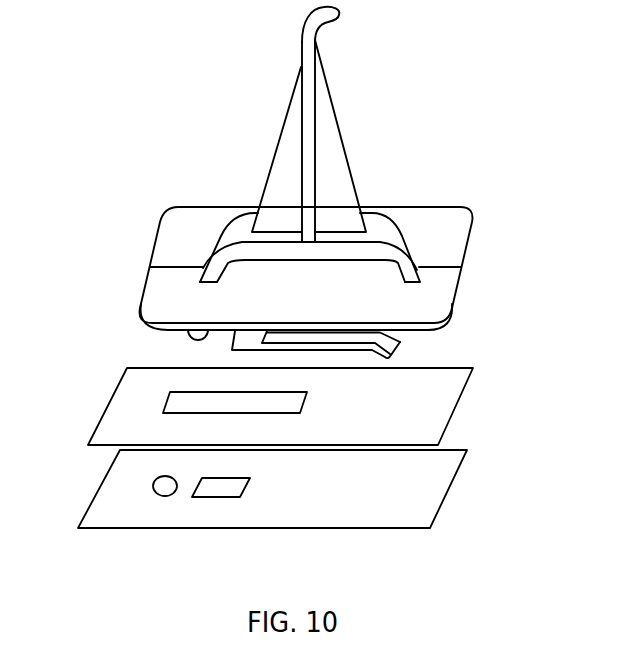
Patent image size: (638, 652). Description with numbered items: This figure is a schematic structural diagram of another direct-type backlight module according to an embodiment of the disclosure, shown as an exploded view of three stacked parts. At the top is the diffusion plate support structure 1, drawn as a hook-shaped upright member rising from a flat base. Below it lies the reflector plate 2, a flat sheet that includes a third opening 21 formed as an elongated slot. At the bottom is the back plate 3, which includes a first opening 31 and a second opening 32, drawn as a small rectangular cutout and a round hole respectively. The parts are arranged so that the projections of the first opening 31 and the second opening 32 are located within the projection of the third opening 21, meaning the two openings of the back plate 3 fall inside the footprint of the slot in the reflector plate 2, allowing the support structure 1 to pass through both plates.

The diffusion plate support structure 1 is at (332, 102).
The reflector plate 2 is at (289, 406).
The third opening 21 is at (163, 408).
The back plate 3 is at (302, 515).
The first opening 31 is at (214, 488).
The second opening 32 is at (165, 496).